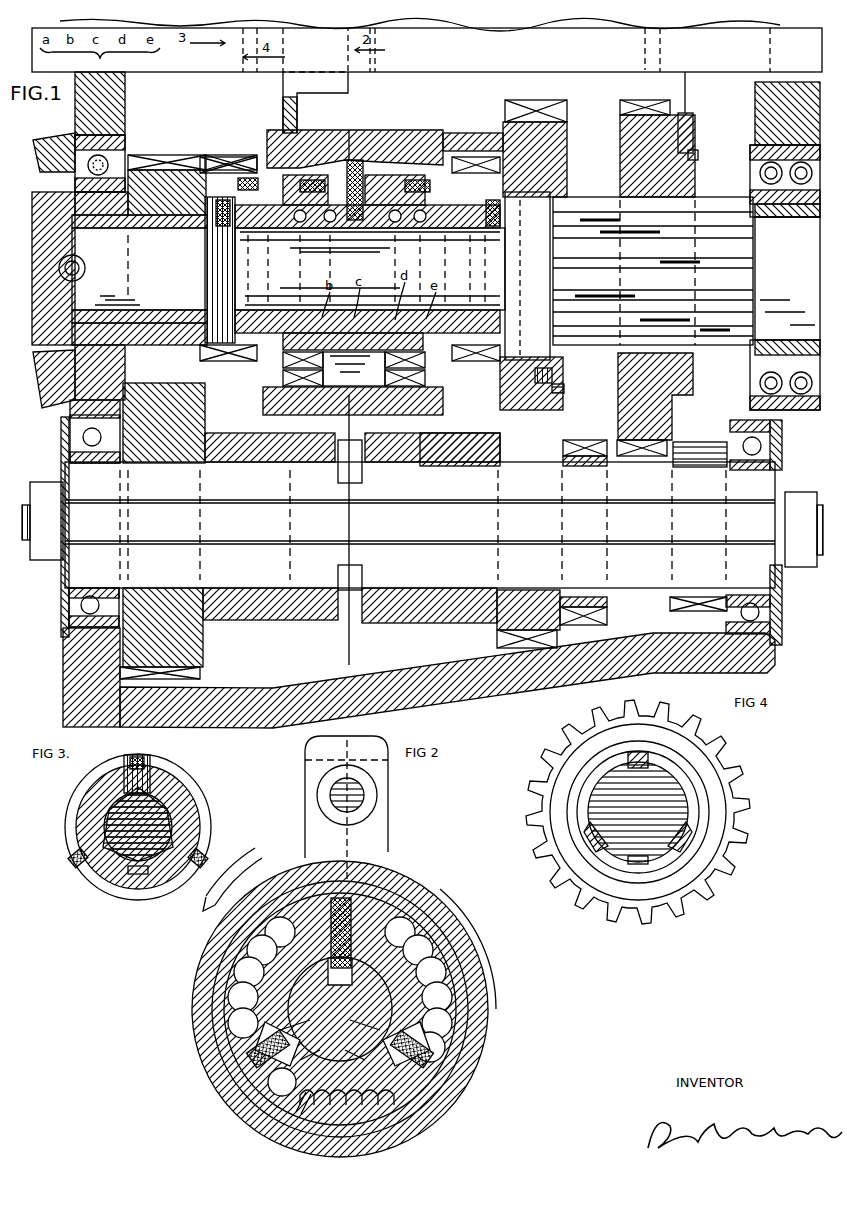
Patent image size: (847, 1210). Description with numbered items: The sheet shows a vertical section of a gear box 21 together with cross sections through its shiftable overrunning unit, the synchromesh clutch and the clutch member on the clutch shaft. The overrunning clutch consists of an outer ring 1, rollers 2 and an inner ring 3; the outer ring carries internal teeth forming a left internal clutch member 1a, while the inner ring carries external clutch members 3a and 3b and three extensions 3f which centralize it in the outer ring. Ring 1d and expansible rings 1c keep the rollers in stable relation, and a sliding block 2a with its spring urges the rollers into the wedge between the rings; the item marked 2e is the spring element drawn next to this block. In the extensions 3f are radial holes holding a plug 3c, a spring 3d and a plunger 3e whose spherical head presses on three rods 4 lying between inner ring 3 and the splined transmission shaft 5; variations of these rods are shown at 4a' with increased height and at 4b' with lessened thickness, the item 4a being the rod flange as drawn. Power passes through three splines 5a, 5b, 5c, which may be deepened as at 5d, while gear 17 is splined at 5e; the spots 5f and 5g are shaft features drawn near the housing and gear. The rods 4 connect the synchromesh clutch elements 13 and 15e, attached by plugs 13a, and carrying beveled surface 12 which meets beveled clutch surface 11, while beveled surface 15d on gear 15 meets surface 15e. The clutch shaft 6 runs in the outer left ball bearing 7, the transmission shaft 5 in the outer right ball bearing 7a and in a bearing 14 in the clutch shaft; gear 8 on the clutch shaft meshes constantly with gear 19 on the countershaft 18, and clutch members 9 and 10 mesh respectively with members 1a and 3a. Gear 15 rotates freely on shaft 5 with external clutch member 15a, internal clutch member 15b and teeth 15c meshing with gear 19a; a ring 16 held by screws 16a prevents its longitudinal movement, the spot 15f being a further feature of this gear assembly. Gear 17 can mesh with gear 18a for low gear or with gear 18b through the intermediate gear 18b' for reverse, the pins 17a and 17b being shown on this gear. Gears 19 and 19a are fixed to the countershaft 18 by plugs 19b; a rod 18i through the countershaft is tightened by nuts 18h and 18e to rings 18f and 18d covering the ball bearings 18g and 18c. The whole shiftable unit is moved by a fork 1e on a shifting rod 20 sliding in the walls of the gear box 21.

In FIG. 1, the outer ring 1 is at (308, 416).
In FIG. 2, the outer ring 1 is at (226, 935).
In FIG. 1, the left internal clutch member 1a is at (296, 166).
In FIG. 2, the left internal clutch member 1a is at (268, 1040).
In FIG. 1, the expansible rings 1c is at (320, 164).
In FIG. 1, the ring 1d is at (314, 164).
In FIG. 1, the fork 1e is at (285, 87).
In FIG. 2, the fork 1e is at (298, 832).
In FIG. 1, the rollers 2 is at (392, 483).
In FIG. 2, the rollers 2 is at (267, 1020).
In FIG. 2, the sliding block 2a is at (268, 888).
In FIG. 2, the bearing cage 2e is at (332, 888).
In FIG. 1, the inner ring 3 is at (355, 256).
In FIG. 2, the inner ring 3 is at (252, 1006).
In FIG. 1, the external clutch member 3a is at (300, 182).
In FIG. 2, the external clutch member 3a is at (266, 1049).
In FIG. 1, the external clutch member 3b is at (418, 192).
In FIG. 1, the plug 3c is at (360, 160).
In FIG. 2, the plug 3c is at (348, 884).
In FIG. 1, the spring 3d is at (370, 162).
In FIG. 2, the spring 3d is at (353, 889).
In FIG. 1, the plunger 3e is at (368, 164).
In FIG. 2, the plunger 3e is at (370, 898).
In FIG. 2, the extensions 3f is at (378, 897).
In FIG. 1, the rods 4 is at (238, 419).
In FIG. 2, the rods 4 is at (286, 960).
In FIG. 3, the rods 4 is at (198, 852).
In FIG. 4, the rods 4 is at (650, 762).
In FIG. 1, the nut flange 4a is at (300, 305).
In FIG. 3, the rod variation of increased height 4a' is at (156, 766).
In FIG. 3, the rod variation of lessened thickness 4b' is at (56, 855).
In FIG. 1, the transmission shaft 5 is at (568, 184).
In FIG. 2, the transmission shaft 5 is at (304, 1020).
In FIG. 3, the transmission shaft 5 is at (100, 830).
In FIG. 4, the transmission shaft 5 is at (658, 814).
In FIG. 3, the spline 5a is at (96, 808).
In FIG. 4, the spline 5a is at (608, 782).
In FIG. 1, the spline 5b is at (304, 240).
In FIG. 2, the spline 5b is at (428, 986).
In FIG. 3, the spline 5b is at (180, 794).
In FIG. 4, the spline 5b is at (668, 780).
In FIG. 3, the spline 5c is at (138, 876).
In FIG. 4, the spline 5c is at (636, 864).
In FIG. 3, the deepened spline 5d is at (86, 794).
In FIG. 1, the spline 5e is at (596, 206).
In FIG. 1, the oil hole 5f is at (68, 276).
In FIG. 1, the shaft shoulder 5g is at (520, 176).
In FIG. 1, the clutch shaft 6 is at (152, 166).
In FIG. 4, the clutch shaft 6 is at (545, 778).
In FIG. 1, the outer left ball bearing 7 is at (70, 185).
In FIG. 1, the outer right ball bearing 7a is at (752, 163).
In FIG. 1, the gear on the clutch shaft 8 is at (134, 160).
In FIG. 1, the clutch member 9 is at (265, 166).
In FIG. 4, the clutch member 9 is at (558, 744).
In FIG. 1, the internal clutch member 10 is at (250, 176).
In FIG. 4, the internal clutch member 10 is at (542, 800).
In FIG. 1, the beveled clutch surface 11 is at (220, 204).
In FIG. 4, the beveled clutch surface 11 is at (568, 828).
In FIG. 1, the beveled surface 12 is at (242, 206).
In FIG. 3, the beveled surface 12 is at (198, 800).
In FIG. 1, the clutch element 13 is at (240, 250).
In FIG. 3, the clutch element 13 is at (182, 774).
In FIG. 1, the plugs 13a is at (208, 239).
In FIG. 3, the plugs 13a is at (196, 868).
In FIG. 1, the bearing 14 is at (168, 214).
In FIG. 1, the gear 15 is at (510, 206).
In FIG. 1, the external clutch member 15a is at (482, 166).
In FIG. 1, the internal clutch member 15b is at (486, 192).
In FIG. 1, the teeth 15c is at (546, 122).
In FIG. 1, the beveled clutch surface 15d is at (524, 222).
In FIG. 1, the beveled surface on clutch element 15e is at (502, 276).
In FIG. 1, the drum key 15f is at (500, 200).
In FIG. 1, the ring 16 is at (566, 391).
In FIG. 1, the bolts or screws 16a is at (558, 370).
In FIG. 1, the gear 17 is at (642, 102).
In FIG. 1, the pin 17a is at (696, 154).
In FIG. 1, the pin 17b is at (686, 106).
In FIG. 1, the countershaft 18 is at (252, 583).
In FIG. 1, the gear 18a is at (598, 622).
In FIG. 1, the gear 18b is at (689, 613).
In FIG. 1, the intermediate gear 18b' is at (700, 443).
In FIG. 1, the ball bearing 18c is at (782, 646).
In FIG. 1, the ring 18d is at (778, 622).
In FIG. 1, the nut 18e is at (805, 570).
In FIG. 1, the ring 18f is at (60, 638).
In FIG. 1, the ball bearing 18g is at (64, 613).
In FIG. 1, the nut 18h is at (43, 563).
In FIG. 1, the rod 18i is at (420, 525).
In FIG. 1, the gear 19 is at (202, 662).
In FIG. 1, the gear for second speed 19a is at (500, 640).
In FIG. 1, the plugs 19b is at (352, 608).
In FIG. 1, the shifting rod 20 is at (427, 50).
In FIG. 2, the shifting rod 20 is at (364, 796).
In FIG. 1, the gear box 21 is at (74, 120).